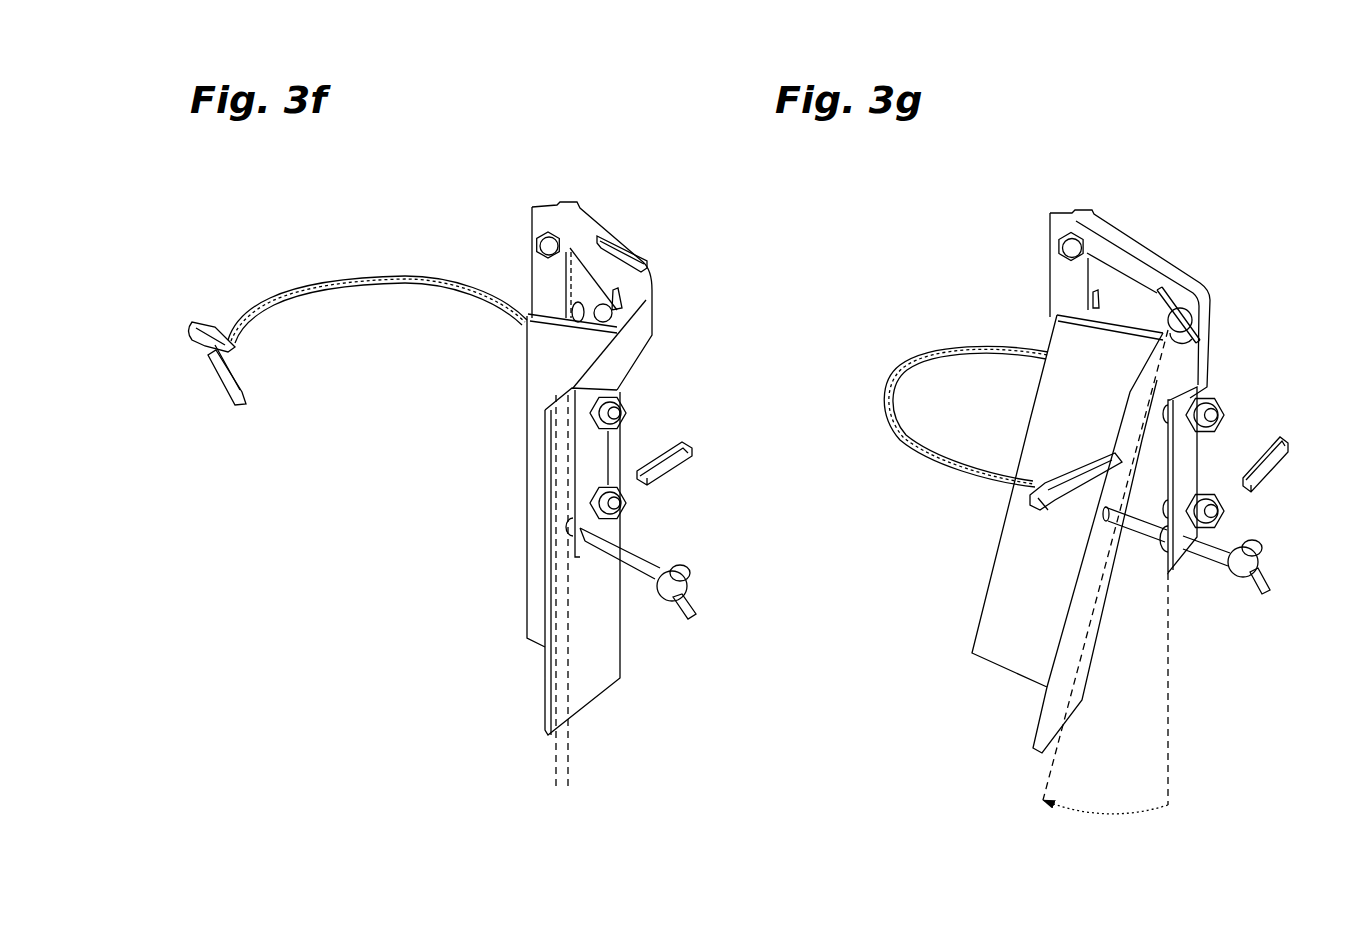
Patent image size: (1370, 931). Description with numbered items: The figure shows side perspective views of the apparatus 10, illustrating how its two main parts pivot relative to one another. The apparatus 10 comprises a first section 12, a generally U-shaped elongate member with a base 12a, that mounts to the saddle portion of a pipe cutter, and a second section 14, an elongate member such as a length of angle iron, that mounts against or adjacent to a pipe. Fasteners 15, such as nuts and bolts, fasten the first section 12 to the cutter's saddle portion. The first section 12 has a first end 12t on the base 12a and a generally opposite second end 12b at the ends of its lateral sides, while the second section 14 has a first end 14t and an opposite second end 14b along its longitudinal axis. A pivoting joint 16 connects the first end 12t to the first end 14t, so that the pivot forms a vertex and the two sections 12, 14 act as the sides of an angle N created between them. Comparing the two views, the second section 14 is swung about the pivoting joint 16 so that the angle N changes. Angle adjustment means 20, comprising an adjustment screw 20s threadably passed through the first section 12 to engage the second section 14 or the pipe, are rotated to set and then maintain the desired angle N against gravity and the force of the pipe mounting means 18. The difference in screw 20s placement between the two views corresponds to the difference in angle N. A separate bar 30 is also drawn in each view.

In FIG. 3f, the apparatus 10 is at (490, 180).
In FIG. 3g, the apparatus 10 is at (1251, 140).
In FIG. 3f, the first section 12 is at (668, 468).
In FIG. 3g, the first section 12 is at (1207, 430).
In FIG. 3f, the base 12a is at (668, 468).
In FIG. 3g, the base 12a is at (1207, 430).
In FIG. 3f, the first end 12t is at (680, 285).
In FIG. 3g, the first end 12t is at (1230, 272).
In FIG. 3f, the second end 12b is at (587, 558).
In FIG. 3g, the second end 12b is at (1186, 576).
In FIG. 3f, the second section 14 is at (403, 467).
In FIG. 3g, the second section 14 is at (989, 498).
In FIG. 3f, the first end 14t is at (528, 333).
In FIG. 3g, the first end 14t is at (1148, 326).
In FIG. 3f, the second end 14b is at (497, 685).
In FIG. 3g, the second end 14b is at (983, 708).
In FIG. 3f, the fasteners 15 is at (583, 205).
In FIG. 3g, the fasteners 15 is at (1060, 196).
In FIG. 3f, the pivoting joint 16 is at (612, 312).
In FIG. 3g, the pivoting joint 16 is at (1181, 305).
In FIG. 3f, the pipe mounting means 18 is at (272, 280).
In FIG. 3g, the pipe mounting means 18 is at (870, 372).
In FIG. 3f, the angle adjustment means 20 is at (698, 567).
In FIG. 3g, the angle adjustment means 20 is at (1236, 550).
In FIG. 3f, the adjustment screw 20s is at (705, 565).
In FIG. 3g, the adjustment screw 20s is at (1270, 559).
In FIG. 3f, the spacer bar 30 is at (640, 236).
In FIG. 3g, the spacer bar 30 is at (1285, 471).
In FIG. 3f, the angle N is at (563, 791).
In FIG. 3g, the angle N is at (1100, 813).